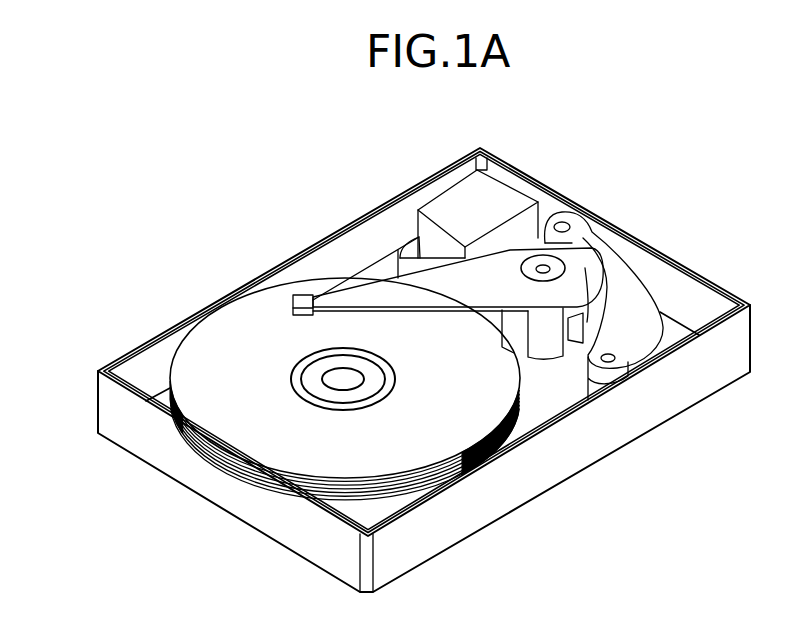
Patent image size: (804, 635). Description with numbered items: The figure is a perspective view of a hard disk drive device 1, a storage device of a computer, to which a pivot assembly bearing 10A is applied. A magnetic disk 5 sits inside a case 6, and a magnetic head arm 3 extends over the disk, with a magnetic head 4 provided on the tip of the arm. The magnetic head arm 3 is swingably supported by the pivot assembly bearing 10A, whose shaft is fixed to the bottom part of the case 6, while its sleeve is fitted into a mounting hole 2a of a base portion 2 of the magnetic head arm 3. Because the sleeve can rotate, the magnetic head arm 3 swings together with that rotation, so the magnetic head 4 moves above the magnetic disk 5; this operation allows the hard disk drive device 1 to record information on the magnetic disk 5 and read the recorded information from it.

The hard disk drive device 1 is at (130, 240).
The base portion 2 is at (528, 252).
The mounting hole 2a is at (627, 252).
The magnetic head arm 3 is at (360, 300).
The magnetic head 4 is at (300, 296).
The magnetic disk 5 is at (243, 320).
The case 6 is at (668, 395).
The pivot assembly bearing 10A is at (553, 260).